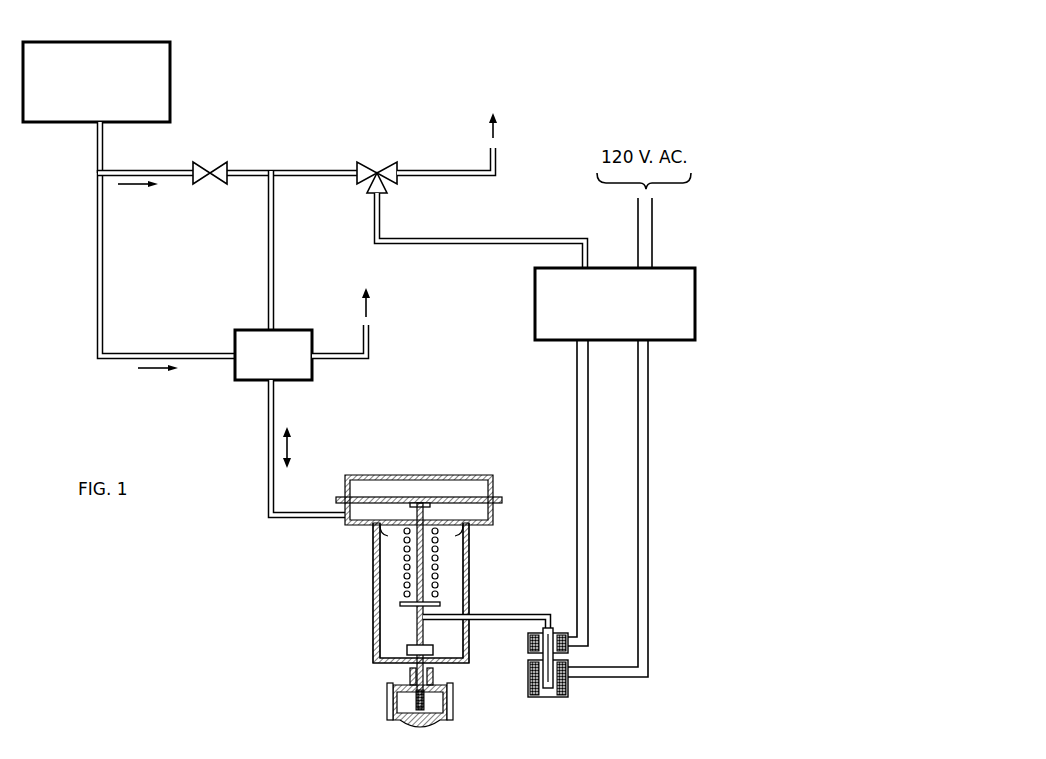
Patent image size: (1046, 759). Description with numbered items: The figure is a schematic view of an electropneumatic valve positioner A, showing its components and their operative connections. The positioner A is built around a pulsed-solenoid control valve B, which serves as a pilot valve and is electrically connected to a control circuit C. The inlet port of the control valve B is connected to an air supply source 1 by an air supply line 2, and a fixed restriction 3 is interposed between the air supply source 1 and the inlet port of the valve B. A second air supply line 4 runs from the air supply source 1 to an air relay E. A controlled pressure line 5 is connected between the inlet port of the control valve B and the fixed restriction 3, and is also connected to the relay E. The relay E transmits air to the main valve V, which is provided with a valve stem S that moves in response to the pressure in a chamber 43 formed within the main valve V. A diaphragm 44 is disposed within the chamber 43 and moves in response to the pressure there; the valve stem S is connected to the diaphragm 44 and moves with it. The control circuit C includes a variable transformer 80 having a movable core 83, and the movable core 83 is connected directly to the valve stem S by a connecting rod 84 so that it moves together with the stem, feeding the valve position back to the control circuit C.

The air supply source 1 is at (170, 78).
The air supply line 2 is at (266, 171).
The fixed restriction 3 is at (220, 167).
The air supply line 4 is at (97, 262).
The controlled pressure line 5 is at (273, 270).
The electropneumatic valve positioner A is at (340, 118).
The pulsed-solenoid control valve B is at (379, 160).
The control circuit C is at (699, 320).
The air relay E is at (237, 320).
The valve stem S is at (418, 558).
The main valve V is at (376, 698).
The chamber 43 is at (477, 512).
The diaphragm 44 is at (458, 500).
The variable transformer 80 is at (521, 694).
The movable core 83 is at (548, 688).
The connecting rod 84 is at (495, 613).